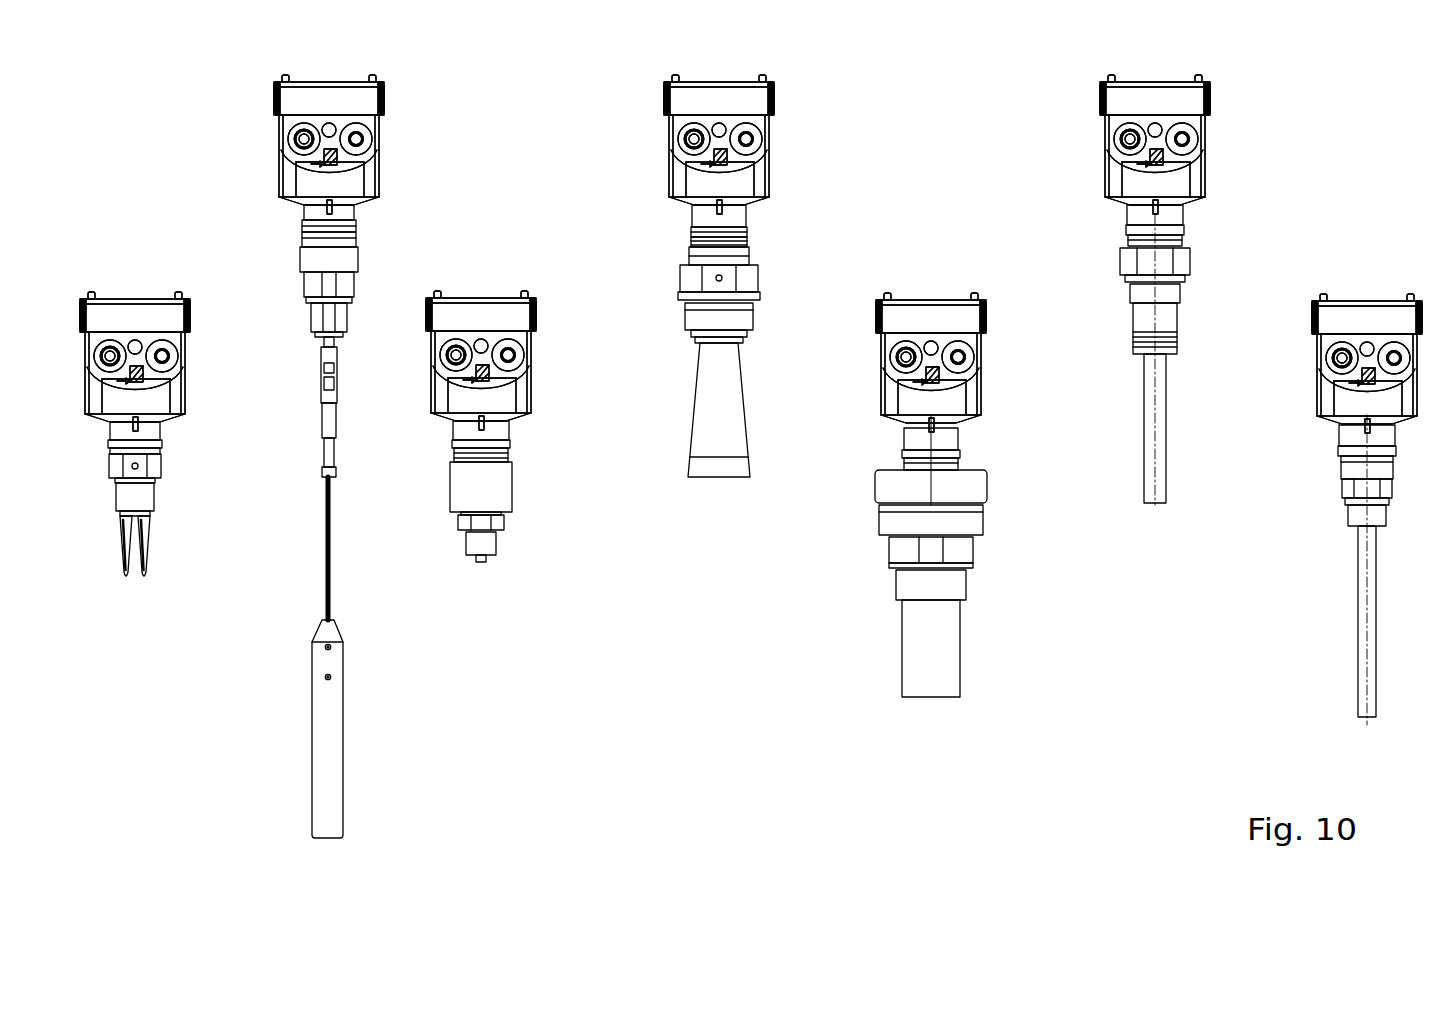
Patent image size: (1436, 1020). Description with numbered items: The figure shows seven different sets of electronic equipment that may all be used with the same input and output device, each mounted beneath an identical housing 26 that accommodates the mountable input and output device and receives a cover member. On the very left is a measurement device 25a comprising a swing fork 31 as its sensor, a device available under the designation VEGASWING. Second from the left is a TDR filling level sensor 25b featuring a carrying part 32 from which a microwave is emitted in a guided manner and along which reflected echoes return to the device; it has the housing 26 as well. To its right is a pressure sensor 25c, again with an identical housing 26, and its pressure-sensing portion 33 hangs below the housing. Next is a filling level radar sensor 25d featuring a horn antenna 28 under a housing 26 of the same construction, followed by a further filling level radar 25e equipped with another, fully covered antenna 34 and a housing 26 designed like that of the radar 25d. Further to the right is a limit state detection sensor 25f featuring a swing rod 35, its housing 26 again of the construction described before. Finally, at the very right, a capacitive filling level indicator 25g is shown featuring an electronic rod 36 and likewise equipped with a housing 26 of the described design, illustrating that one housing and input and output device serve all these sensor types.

The vibration level switch sensor 25a is at (202, 349).
The TDR filling level sensor 25b is at (400, 158).
The pressure sensor 25c is at (538, 373).
The filling level radar sensor 25d is at (783, 152).
The filling level radar 25e is at (933, 297).
The limit state detection sensor 25f is at (1212, 147).
The capacitive filling level indicator 25g is at (1368, 298).
The housing 26 is at (183, 393).
The horn antenna 28 is at (726, 416).
The swing fork 31 is at (145, 495).
The carrying part 32 is at (330, 755).
The pressure measuring cell 33 is at (500, 492).
The antenna 34 is at (947, 663).
The swing rod 35 is at (1157, 505).
The electronic rod 36 is at (1360, 650).